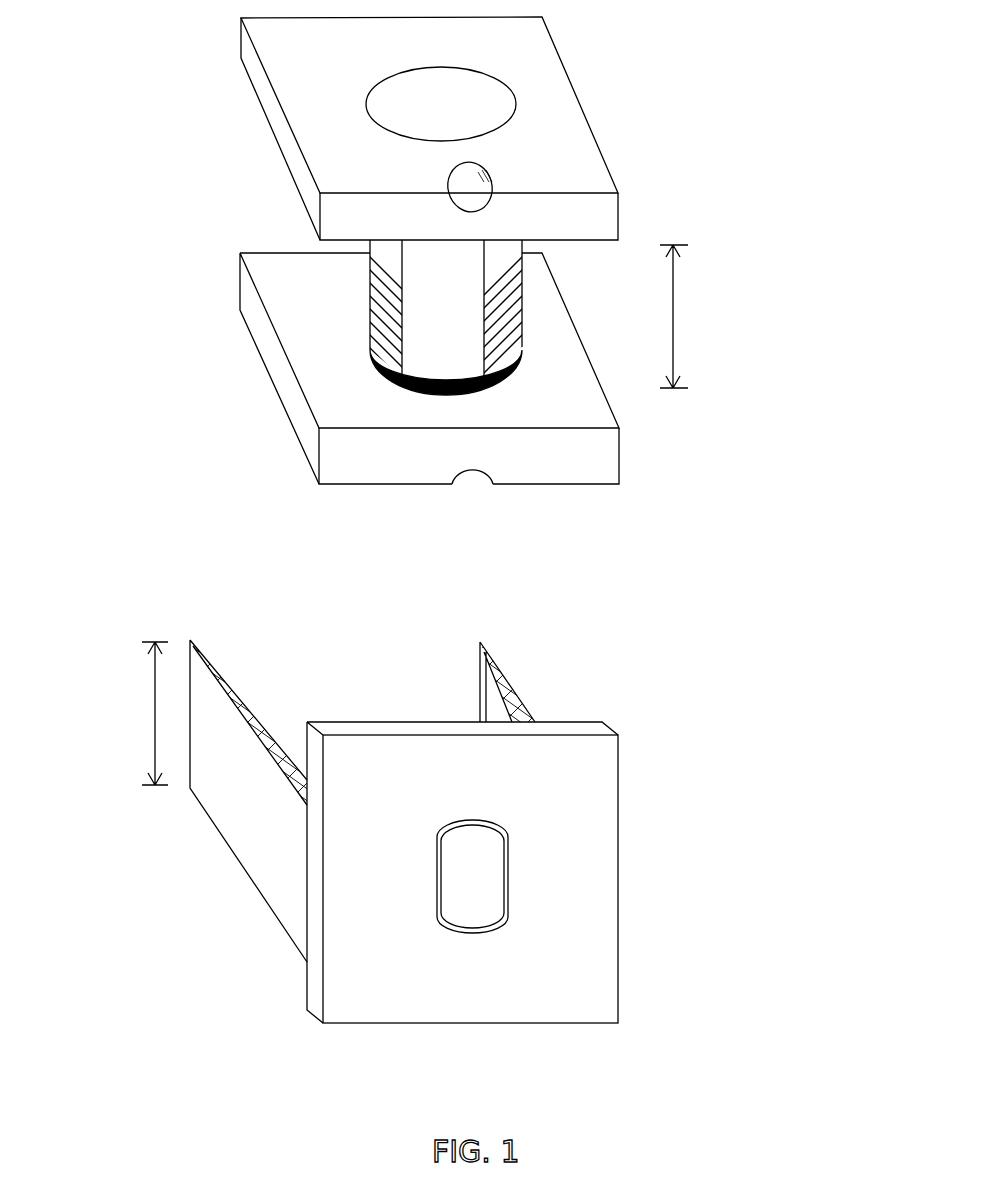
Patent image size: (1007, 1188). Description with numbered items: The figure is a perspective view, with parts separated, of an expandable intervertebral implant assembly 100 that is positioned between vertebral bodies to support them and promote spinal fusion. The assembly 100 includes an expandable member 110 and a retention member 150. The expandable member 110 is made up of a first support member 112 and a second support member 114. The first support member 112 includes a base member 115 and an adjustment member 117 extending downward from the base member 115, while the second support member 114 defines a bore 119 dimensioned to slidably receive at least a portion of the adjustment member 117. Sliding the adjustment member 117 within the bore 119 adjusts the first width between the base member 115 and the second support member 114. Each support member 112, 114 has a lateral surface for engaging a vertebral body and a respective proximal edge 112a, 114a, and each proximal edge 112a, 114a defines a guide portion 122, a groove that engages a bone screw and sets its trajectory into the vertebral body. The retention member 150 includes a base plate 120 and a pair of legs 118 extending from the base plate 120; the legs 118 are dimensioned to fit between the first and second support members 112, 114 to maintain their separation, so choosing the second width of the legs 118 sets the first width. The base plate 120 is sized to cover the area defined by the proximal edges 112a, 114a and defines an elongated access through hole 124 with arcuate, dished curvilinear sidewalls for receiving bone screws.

The expandable intervertebral implant assembly 100 is at (790, 642).
The expandable member 110 is at (158, 330).
The first support member 112 is at (471, 274).
The proximal edge 112a is at (600, 217).
The second support member 114 is at (442, 371).
The proximal edge 114a is at (610, 475).
The base member 115 is at (537, 38).
The adjustment member 117 is at (472, 319).
The legs 118 is at (248, 808).
The bore 119 is at (517, 370).
The base plate 120 is at (514, 835).
The guide portion 122 is at (452, 182).
The access through hole 124 is at (493, 887).
The retention member 150 is at (214, 998).